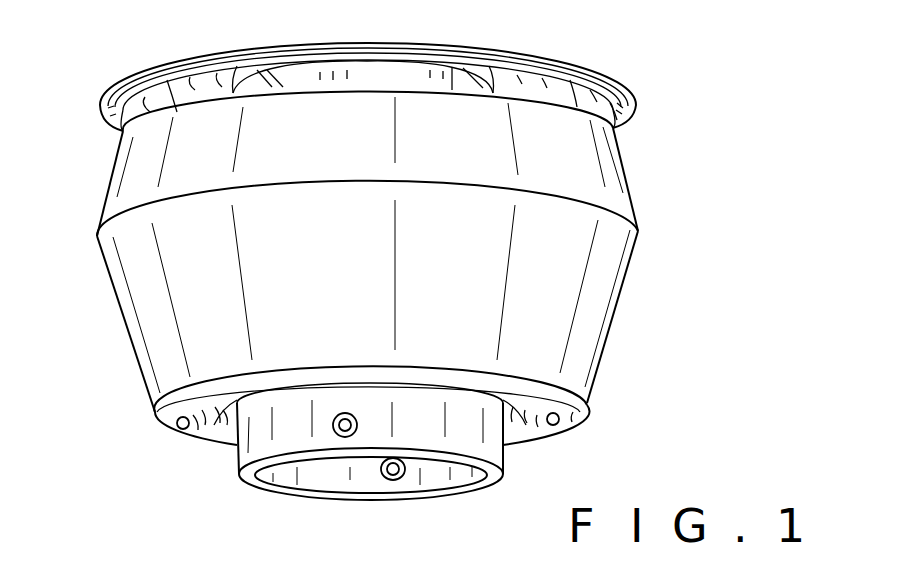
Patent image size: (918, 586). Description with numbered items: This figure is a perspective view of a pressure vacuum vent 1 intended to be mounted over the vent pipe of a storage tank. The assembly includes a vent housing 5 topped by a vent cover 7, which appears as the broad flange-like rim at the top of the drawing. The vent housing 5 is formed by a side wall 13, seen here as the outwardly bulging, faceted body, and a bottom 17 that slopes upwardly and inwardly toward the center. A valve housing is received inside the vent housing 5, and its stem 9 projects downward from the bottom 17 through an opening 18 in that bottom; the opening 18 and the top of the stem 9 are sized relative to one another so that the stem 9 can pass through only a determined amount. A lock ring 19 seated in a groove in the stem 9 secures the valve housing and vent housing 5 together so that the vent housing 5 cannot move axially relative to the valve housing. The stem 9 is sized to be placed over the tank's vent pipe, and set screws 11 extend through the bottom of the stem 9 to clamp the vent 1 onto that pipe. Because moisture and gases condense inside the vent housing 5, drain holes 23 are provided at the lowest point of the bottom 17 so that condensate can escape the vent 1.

The pressure vacuum vent 1 is at (705, 98).
The vent housing 5 is at (645, 185).
The vent cover 7 is at (615, 73).
The stem 9 is at (508, 459).
The set screws 11 is at (345, 438).
The side wall 13 is at (632, 266).
The bottom 17 is at (560, 430).
The opening 18 is at (234, 400).
The lock ring 19 is at (233, 420).
The drain holes 23 is at (180, 433).